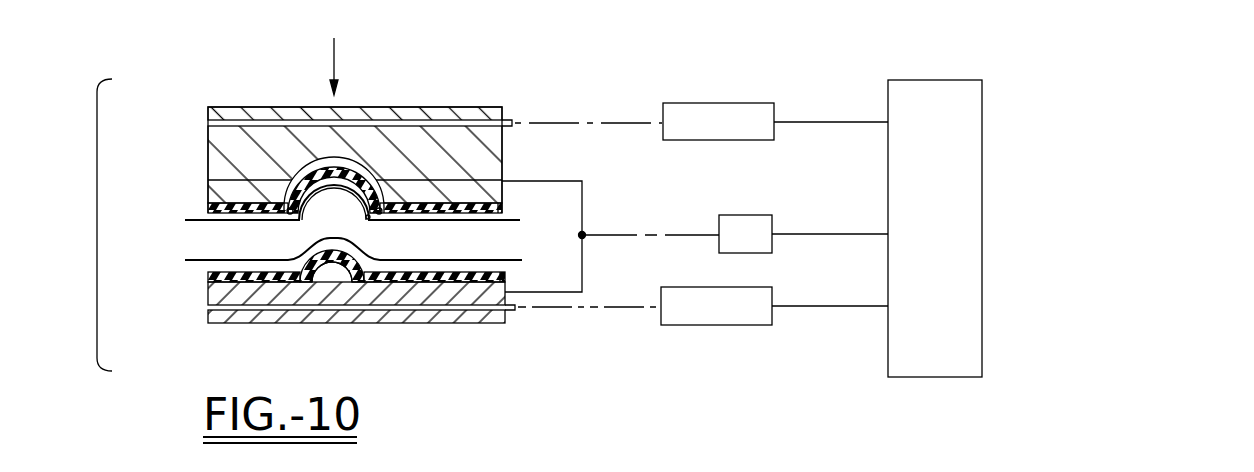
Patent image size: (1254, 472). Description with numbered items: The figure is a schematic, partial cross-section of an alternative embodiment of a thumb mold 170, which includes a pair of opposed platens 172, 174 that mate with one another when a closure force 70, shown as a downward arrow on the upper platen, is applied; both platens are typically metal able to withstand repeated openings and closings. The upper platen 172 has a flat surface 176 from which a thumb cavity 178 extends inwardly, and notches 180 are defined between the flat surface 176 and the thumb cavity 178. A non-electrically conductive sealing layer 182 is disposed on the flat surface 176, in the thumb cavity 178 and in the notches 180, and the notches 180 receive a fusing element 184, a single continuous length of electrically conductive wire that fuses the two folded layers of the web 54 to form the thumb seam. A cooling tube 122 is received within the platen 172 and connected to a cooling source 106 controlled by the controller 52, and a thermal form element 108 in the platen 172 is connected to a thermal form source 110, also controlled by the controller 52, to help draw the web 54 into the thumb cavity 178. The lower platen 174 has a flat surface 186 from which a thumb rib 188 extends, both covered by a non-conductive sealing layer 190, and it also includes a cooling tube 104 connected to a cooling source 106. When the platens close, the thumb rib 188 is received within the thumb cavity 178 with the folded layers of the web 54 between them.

The thumb mold 170 is at (88, 221).
The closure force 70 is at (336, 63).
The platen 172 is at (210, 143).
The cooling tube 122 is at (455, 122).
The flat surface 176 is at (210, 206).
The web 54 is at (187, 220).
The thumb cavity 178 is at (318, 214).
The fusing element 184 is at (365, 217).
The notches 180 is at (411, 207).
The sealing layer 182 is at (503, 212).
The flat surface 186 is at (210, 274).
The sealing layer 190 is at (505, 275).
The thumb rib 188 is at (333, 273).
The platen 174 is at (210, 298).
The cooling tube 104 is at (457, 311).
The thermal form element 108 is at (582, 193).
The cooling source 106 is at (735, 103).
The thermal form source 110 is at (742, 215).
The controller 52 is at (982, 140).